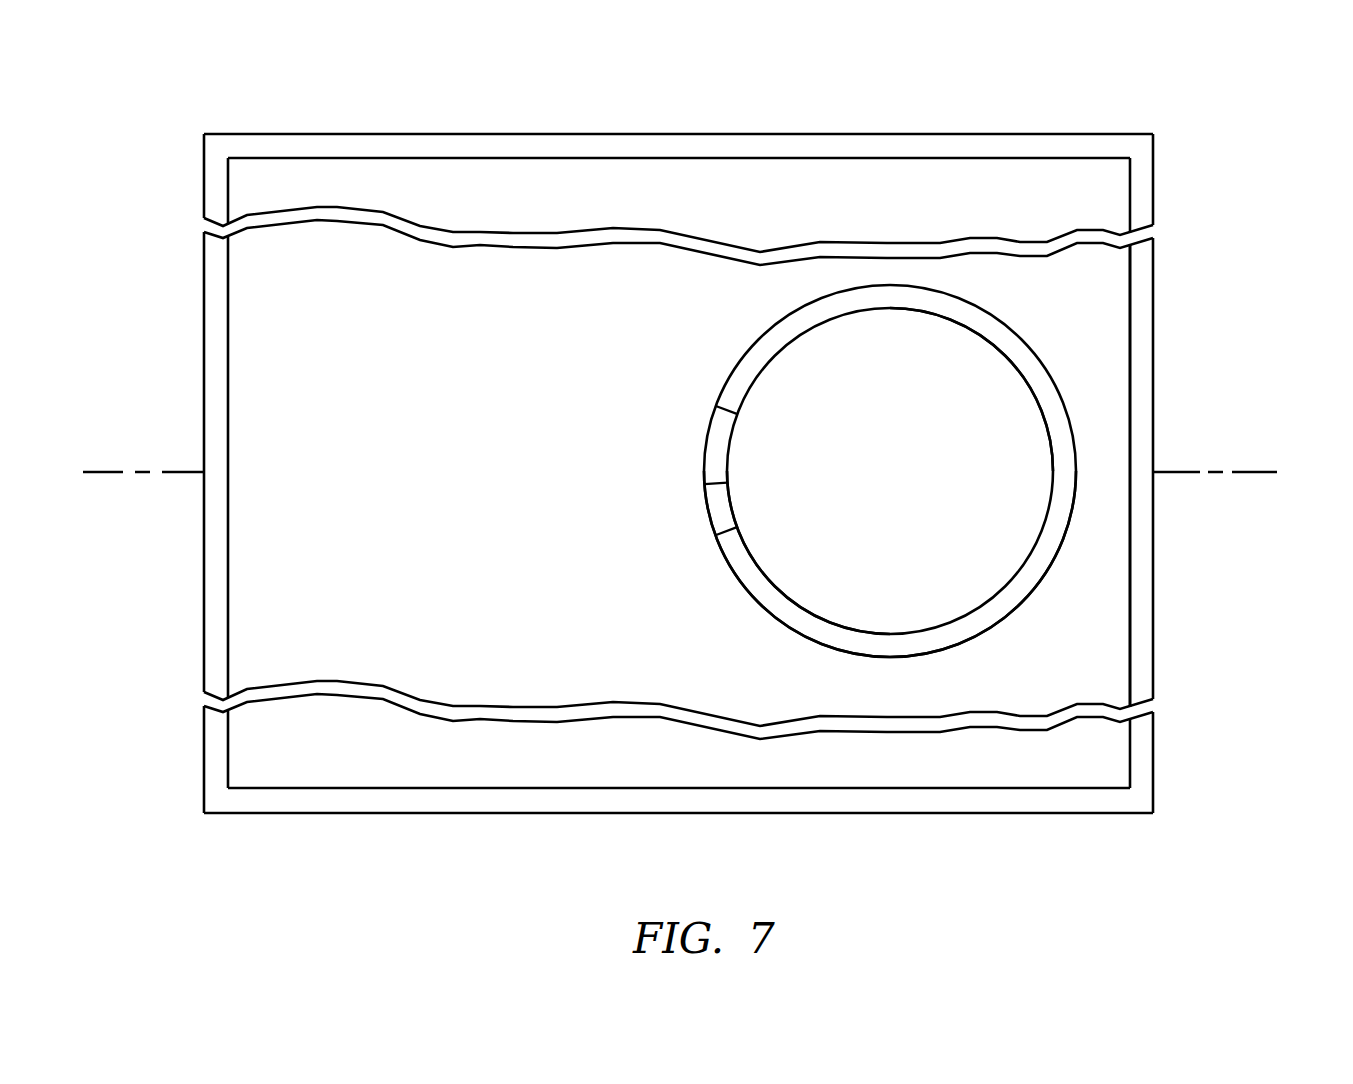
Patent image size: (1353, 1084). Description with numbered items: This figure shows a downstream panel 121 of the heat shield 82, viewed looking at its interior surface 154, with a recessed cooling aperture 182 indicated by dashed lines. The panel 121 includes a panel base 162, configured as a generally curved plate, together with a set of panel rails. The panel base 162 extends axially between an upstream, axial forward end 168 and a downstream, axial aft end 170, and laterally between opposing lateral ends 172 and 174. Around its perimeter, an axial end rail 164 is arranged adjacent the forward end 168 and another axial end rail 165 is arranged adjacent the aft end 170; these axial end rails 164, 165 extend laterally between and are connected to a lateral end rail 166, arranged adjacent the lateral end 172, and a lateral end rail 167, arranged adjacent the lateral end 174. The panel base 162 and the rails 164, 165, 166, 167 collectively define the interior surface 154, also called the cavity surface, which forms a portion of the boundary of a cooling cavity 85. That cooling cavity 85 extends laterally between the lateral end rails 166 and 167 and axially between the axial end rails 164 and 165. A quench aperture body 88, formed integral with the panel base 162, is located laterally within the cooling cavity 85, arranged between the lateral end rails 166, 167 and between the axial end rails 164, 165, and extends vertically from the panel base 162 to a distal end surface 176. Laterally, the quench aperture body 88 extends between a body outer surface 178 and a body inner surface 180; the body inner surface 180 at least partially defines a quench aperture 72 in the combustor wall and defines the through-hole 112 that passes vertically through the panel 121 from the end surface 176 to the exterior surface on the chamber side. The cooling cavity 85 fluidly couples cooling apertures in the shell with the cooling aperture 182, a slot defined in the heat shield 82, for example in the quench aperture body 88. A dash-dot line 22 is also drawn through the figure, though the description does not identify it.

The heat shield 82 is at (1195, 150).
The panel 121 is at (709, 478).
The lateral end 172 is at (340, 132).
The lateral end rail 166 is at (453, 145).
The lateral end 174 is at (248, 815).
The lateral end rail 167 is at (300, 800).
The axial end rail 164 is at (213, 574).
The upstream end 168 is at (203, 617).
The aft end 170 is at (1155, 542).
The panel base 162 is at (1092, 635).
The axial end rail 165 is at (1145, 572).
The interior surface 154 is at (1100, 286).
The cooling cavity 85 is at (410, 755).
The central axis 22 is at (1247, 470).
The distal end surface 176 is at (900, 642).
The body outer surface 178 is at (993, 628).
The body inner surface 180 is at (960, 620).
The quench aperture body 88 is at (1032, 393).
The through-hole 112 is at (810, 578).
The quench aperture 72 is at (904, 494).
The cooling aperture 182 is at (727, 480).